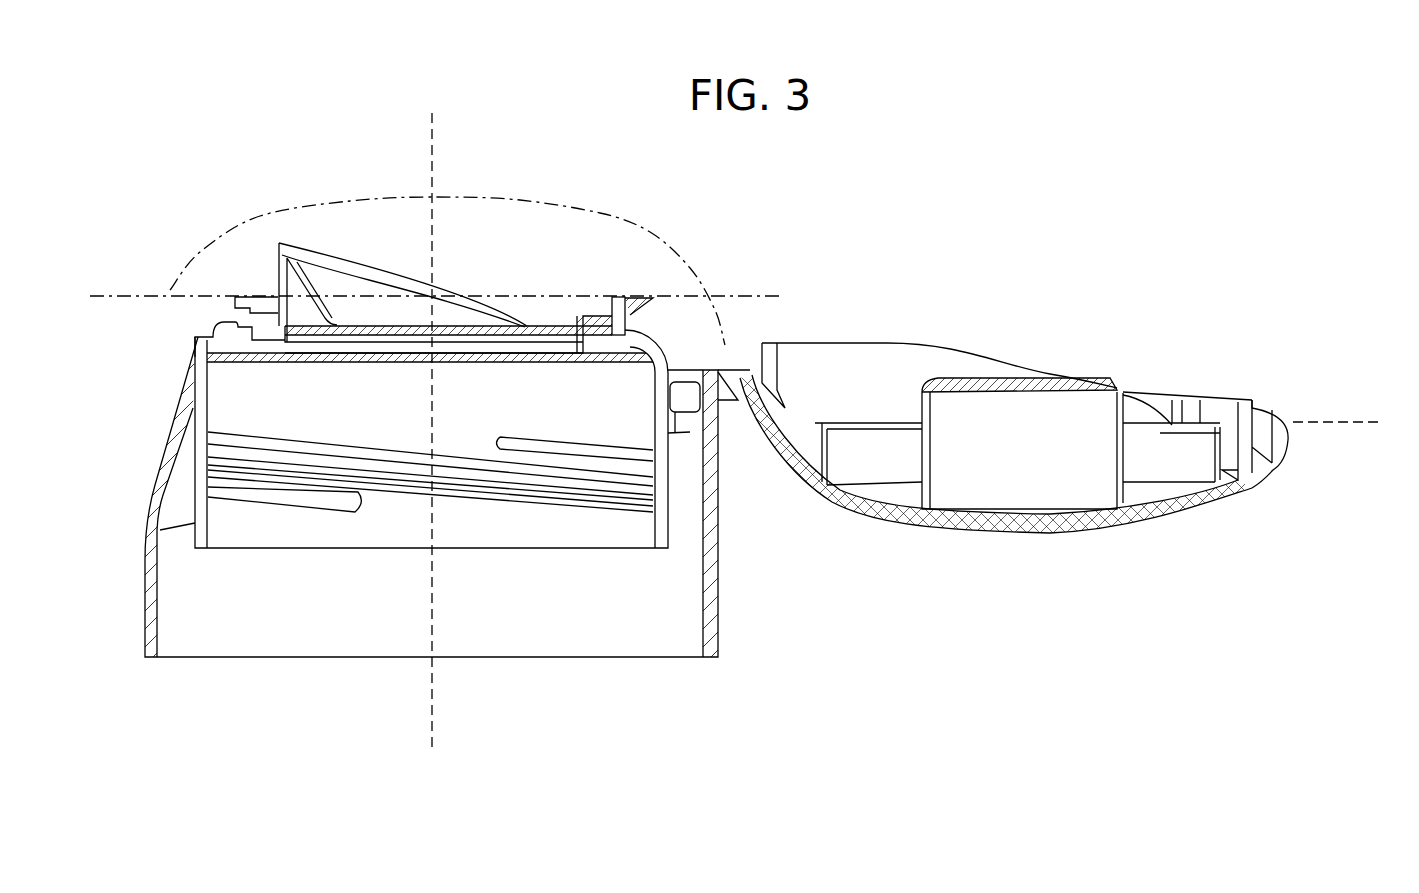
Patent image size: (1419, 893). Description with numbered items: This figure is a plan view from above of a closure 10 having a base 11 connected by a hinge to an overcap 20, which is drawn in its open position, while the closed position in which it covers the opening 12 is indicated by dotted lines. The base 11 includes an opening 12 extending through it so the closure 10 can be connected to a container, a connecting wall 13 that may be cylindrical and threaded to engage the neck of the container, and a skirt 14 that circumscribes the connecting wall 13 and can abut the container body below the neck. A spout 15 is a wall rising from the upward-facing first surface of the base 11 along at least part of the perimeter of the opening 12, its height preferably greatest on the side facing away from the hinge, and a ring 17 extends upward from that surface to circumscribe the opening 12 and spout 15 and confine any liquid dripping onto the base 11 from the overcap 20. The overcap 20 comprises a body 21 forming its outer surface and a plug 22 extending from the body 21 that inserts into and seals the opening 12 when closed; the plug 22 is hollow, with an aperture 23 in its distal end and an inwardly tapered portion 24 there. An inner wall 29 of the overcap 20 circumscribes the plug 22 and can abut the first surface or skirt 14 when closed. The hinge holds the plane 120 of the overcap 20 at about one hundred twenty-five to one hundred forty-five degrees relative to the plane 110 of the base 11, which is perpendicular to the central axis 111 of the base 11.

The closure 10 is at (1088, 232).
The base 11 is at (133, 443).
The opening 12 is at (375, 319).
The connecting wall 13 is at (651, 527).
The skirt 14 is at (136, 612).
The spout 15 is at (278, 262).
The ring 17 is at (632, 306).
The overcap 20 is at (1180, 620).
The body 21 is at (1179, 514).
The plug 22 is at (1081, 368).
The aperture 23 is at (1006, 442).
The tapered portion 24 is at (1130, 381).
The inner wall 29 is at (832, 457).
The plane of the base 110 is at (413, 271).
The central axis 111 is at (432, 420).
The plane of the overcap 120 is at (1355, 422).